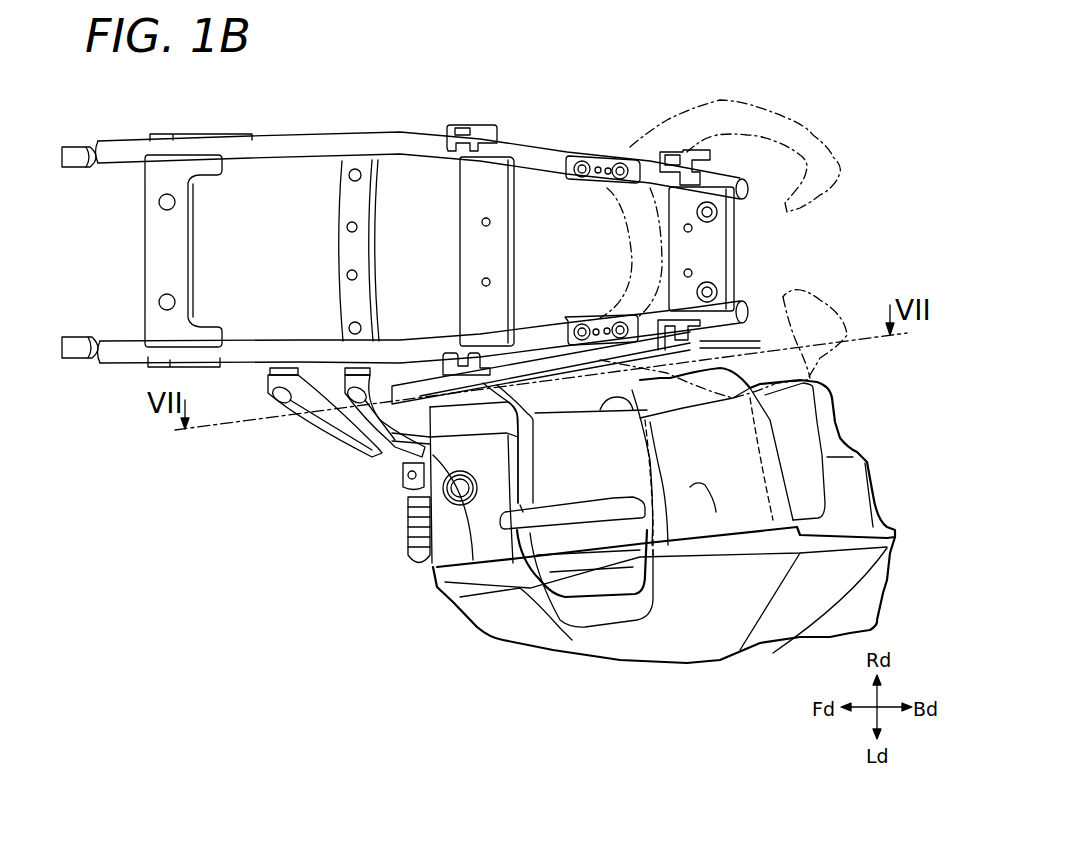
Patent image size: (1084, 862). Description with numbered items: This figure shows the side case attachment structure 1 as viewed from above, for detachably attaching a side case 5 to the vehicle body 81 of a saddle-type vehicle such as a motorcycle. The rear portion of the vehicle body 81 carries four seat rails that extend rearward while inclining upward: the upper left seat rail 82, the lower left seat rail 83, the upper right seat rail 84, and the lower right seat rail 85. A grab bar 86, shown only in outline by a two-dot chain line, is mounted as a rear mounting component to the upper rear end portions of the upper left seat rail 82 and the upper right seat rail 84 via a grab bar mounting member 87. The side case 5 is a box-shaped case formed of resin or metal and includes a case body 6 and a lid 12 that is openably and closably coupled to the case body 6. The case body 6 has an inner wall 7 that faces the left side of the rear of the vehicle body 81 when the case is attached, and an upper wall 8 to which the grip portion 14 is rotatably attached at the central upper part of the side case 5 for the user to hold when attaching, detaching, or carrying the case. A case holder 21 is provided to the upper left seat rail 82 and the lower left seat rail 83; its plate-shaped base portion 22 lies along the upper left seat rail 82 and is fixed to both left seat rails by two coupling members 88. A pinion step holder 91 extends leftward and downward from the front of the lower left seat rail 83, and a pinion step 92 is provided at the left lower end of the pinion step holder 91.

The side case attachment structure 1 is at (290, 556).
The side case 5 is at (645, 676).
The case body 6 is at (864, 455).
The inner wall 7 is at (668, 548).
The upper wall 8 is at (716, 512).
The lid 12 is at (883, 600).
The grip portion 14 is at (556, 520).
The case holder 21 is at (560, 395).
The base portion 22 is at (537, 383).
The vehicle body 81 is at (301, 122).
The upper left seat rail 82 is at (127, 363).
The lower left seat rail 83 is at (217, 363).
The upper right seat rail 84 is at (127, 146).
The lower right seat rail 85 is at (197, 133).
The grab bar 86 is at (825, 290).
The grab bar mounting member 87 is at (602, 156).
The coupling member 88 is at (472, 125).
The pinion step holder 91 is at (338, 432).
The pinion step 92 is at (408, 528).